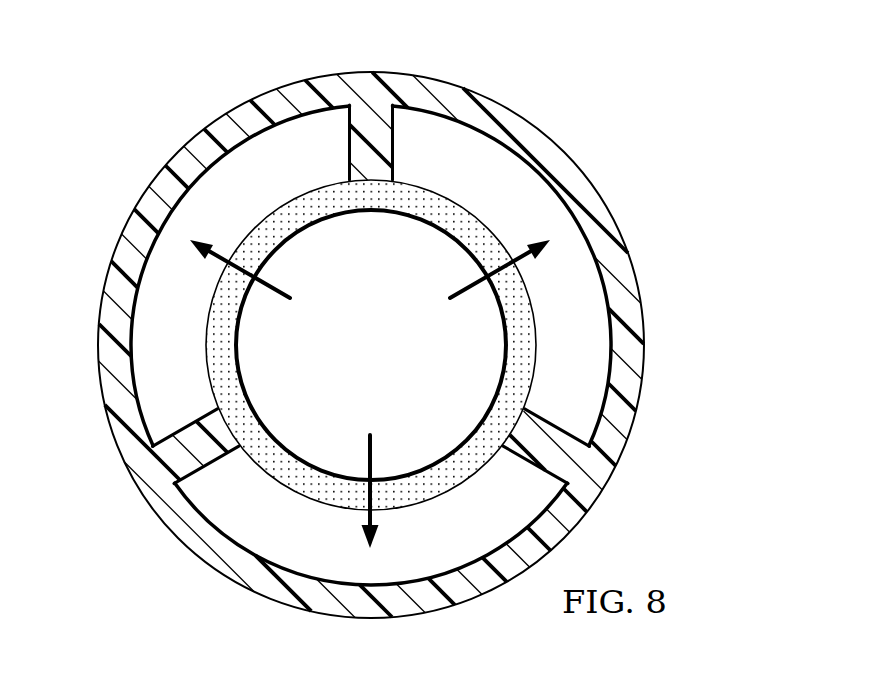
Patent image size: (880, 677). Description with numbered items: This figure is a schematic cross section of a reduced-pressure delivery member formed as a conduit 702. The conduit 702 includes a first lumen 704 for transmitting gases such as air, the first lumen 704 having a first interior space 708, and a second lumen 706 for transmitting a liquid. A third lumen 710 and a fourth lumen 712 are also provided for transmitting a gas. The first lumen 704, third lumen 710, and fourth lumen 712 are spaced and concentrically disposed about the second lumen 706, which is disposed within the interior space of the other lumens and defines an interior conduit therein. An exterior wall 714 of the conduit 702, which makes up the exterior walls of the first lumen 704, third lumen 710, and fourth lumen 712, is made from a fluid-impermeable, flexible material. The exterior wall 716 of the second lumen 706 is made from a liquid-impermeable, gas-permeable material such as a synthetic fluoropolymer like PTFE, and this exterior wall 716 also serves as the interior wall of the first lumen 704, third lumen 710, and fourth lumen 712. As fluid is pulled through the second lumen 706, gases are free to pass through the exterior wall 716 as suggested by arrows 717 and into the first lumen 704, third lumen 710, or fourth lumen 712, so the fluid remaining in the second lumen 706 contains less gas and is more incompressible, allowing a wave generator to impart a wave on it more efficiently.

The conduit 702 is at (393, 73).
The first lumen 704 is at (203, 183).
The second lumen 706 is at (538, 318).
The first interior space 708 is at (160, 298).
The third lumen 710 is at (590, 297).
The fourth lumen 712 is at (285, 564).
The exterior wall 714 is at (503, 108).
The exterior wall of the second lumen 716 is at (200, 340).
The arrows 717 is at (265, 285).